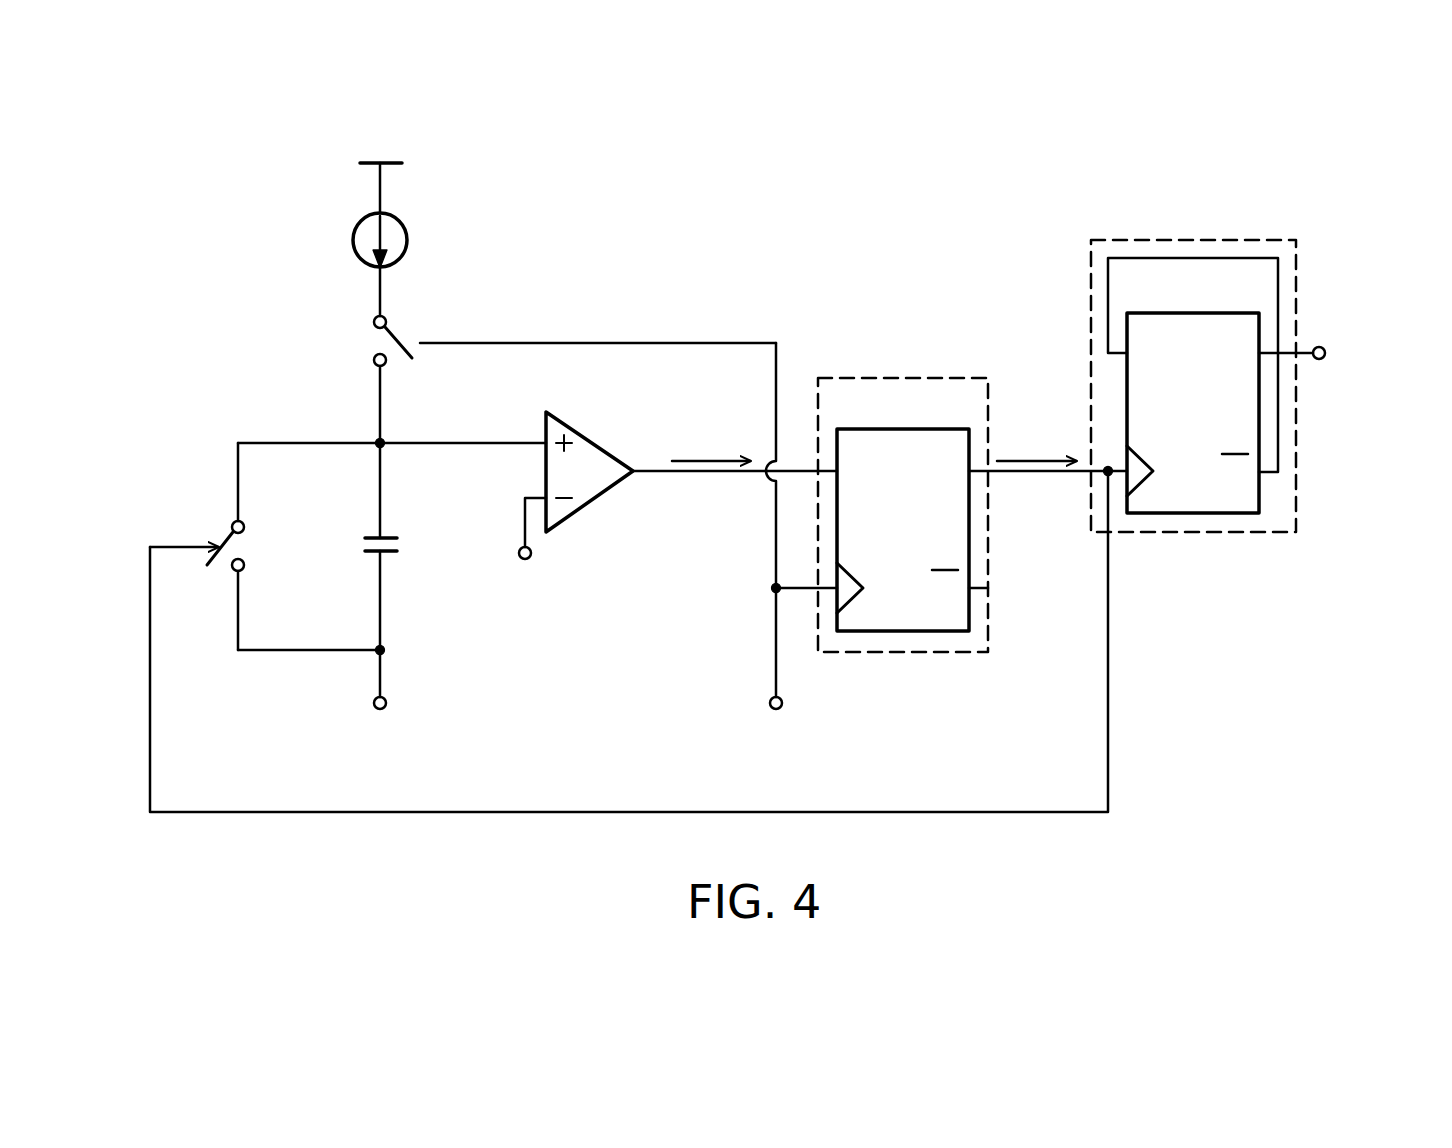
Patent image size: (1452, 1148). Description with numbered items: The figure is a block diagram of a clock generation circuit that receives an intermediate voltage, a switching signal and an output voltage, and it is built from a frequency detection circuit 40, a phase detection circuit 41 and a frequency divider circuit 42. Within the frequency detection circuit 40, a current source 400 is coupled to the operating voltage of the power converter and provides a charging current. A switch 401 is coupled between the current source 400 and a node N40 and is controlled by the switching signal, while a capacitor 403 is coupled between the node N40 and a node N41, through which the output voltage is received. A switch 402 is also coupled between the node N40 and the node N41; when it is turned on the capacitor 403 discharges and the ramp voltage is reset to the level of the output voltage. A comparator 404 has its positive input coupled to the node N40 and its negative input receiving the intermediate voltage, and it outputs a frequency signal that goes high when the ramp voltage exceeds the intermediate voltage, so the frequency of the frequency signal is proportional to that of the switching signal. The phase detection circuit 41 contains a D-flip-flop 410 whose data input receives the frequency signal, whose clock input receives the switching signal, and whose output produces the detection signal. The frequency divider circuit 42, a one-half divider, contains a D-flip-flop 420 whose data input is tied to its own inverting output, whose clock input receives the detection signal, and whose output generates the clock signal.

The frequency detection circuit 40 is at (640, 168).
The current source 400 is at (407, 240).
The switch 401 is at (376, 341).
The switch 402 is at (248, 549).
The capacitor 403 is at (388, 535).
The comparator 404 is at (594, 437).
The phase detection circuit 41 is at (820, 378).
The D-flip-flop 410 is at (838, 429).
The frequency divider circuit 42 is at (1094, 240).
The D-flip-flop 420 is at (1128, 313).
The node N40 is at (378, 441).
The node N41 is at (385, 650).